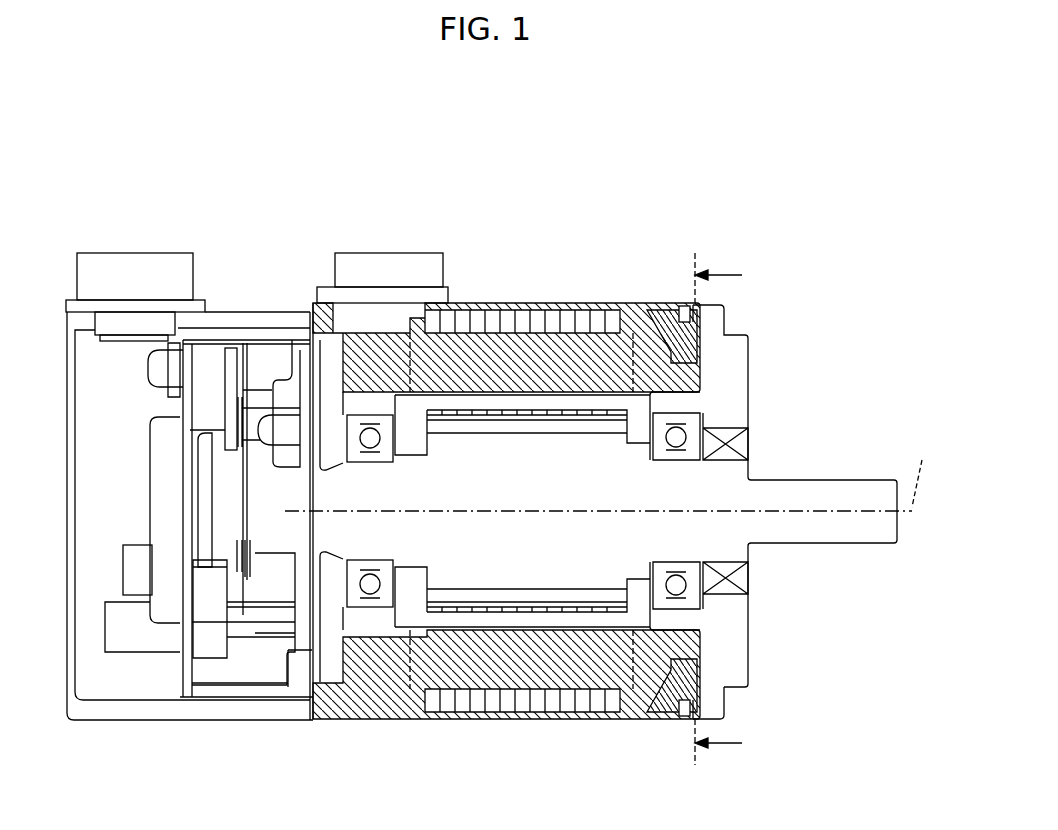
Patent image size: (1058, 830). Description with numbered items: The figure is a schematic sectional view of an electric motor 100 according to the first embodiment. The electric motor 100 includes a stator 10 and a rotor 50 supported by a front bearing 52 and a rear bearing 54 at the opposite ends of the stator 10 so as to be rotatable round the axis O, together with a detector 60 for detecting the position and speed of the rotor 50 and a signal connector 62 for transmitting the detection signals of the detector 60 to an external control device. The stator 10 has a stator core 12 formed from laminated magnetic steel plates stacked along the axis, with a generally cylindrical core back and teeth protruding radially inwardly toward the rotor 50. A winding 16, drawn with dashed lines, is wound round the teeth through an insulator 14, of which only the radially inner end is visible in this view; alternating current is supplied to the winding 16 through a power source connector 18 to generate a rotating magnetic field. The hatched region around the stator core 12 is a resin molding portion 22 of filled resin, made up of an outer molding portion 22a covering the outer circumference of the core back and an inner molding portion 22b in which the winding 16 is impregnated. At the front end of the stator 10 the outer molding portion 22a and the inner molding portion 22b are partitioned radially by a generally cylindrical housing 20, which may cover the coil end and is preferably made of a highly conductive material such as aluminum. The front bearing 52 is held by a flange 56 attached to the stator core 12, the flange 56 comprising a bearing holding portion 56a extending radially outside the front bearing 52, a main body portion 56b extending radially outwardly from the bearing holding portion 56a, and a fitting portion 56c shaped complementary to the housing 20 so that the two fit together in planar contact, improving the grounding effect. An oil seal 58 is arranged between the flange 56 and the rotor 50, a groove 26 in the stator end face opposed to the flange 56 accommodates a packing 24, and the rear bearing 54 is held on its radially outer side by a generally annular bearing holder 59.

The electric motor 100 is at (798, 262).
The stator 10 is at (515, 280).
The stator core 12 is at (545, 320).
The insulator 14 is at (496, 403).
The winding 16 is at (633, 725).
The power source connector 18 is at (400, 253).
The housing 20 is at (657, 312).
The resin molding portion 22 is at (550, 190).
The outer molding portion 22a is at (603, 305).
The inner molding portion 22b is at (584, 365).
The packing 24 is at (690, 316).
The groove 26 is at (684, 306).
The rotor 50 is at (858, 543).
The front bearing 52 is at (693, 408).
The rear bearing 54 is at (377, 607).
The flange 56 is at (732, 360).
The bearing holding portion 56a is at (680, 617).
The main body portion 56b is at (737, 648).
The fitting portion 56c is at (720, 703).
The oil seal 58 is at (747, 443).
The bearing holder 59 is at (333, 665).
The detector 60 is at (268, 350).
The signal connector 62 is at (158, 253).